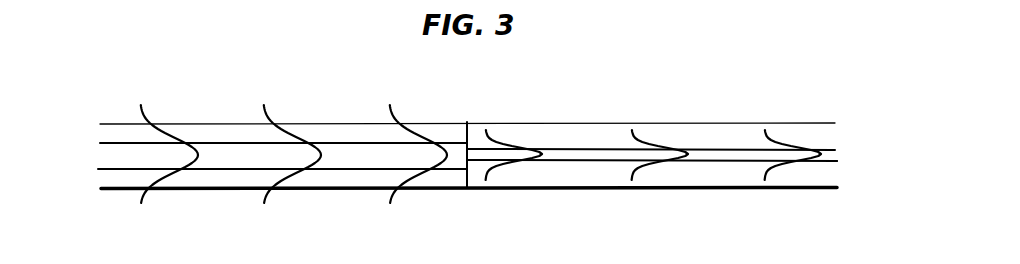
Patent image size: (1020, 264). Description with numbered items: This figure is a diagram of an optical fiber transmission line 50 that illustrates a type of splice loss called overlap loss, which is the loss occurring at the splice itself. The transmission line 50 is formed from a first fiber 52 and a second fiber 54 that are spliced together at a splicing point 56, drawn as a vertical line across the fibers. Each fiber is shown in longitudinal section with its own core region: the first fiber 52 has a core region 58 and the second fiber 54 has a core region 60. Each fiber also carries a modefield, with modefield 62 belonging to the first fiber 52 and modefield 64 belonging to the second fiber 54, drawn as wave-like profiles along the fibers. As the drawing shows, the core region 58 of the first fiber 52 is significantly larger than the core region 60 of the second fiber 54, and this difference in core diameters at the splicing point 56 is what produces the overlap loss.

The optical fiber transmission line 50 is at (773, 102).
The first fiber 52 is at (185, 124).
The second fiber 54 is at (682, 122).
The splicing point 56 is at (467, 122).
The core region 58 is at (98, 169).
The core region 60 is at (837, 161).
The modefield 62 is at (263, 192).
The modefield 64 is at (633, 172).